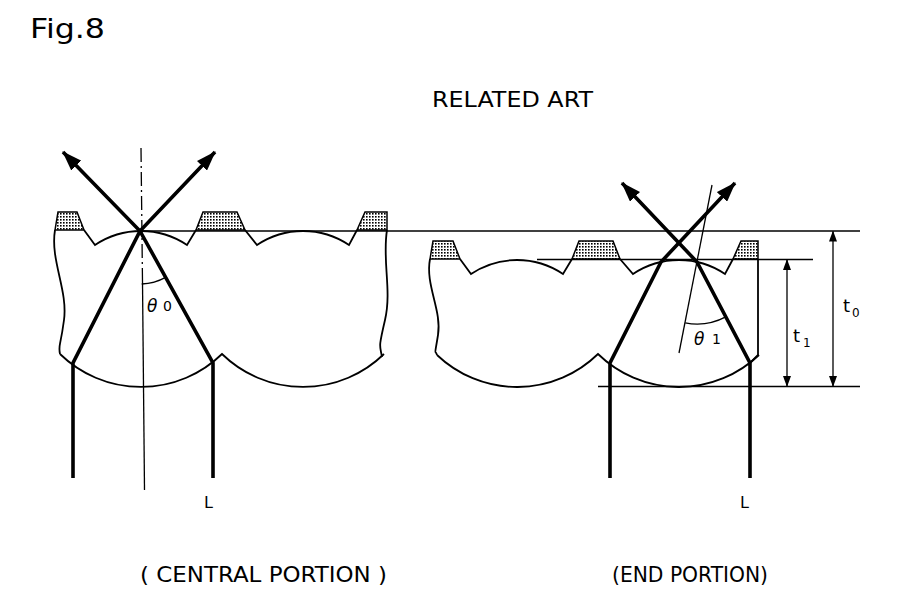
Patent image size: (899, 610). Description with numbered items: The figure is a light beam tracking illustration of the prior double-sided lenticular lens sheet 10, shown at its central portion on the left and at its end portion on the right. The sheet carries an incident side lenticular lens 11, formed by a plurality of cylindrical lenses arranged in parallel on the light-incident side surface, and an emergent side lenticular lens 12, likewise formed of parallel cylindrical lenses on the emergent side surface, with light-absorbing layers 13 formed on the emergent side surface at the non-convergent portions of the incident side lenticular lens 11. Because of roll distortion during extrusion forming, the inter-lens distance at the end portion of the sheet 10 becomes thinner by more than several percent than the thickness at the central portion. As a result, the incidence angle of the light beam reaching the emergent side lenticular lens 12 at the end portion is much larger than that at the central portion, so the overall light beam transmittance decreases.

The double-sided lenticular lens sheet 10 is at (406, 338).
The incident side lenticular lens 11 is at (300, 389).
The emergent side lenticular lens 12 is at (95, 241).
The light-absorbing layer 13 is at (222, 211).